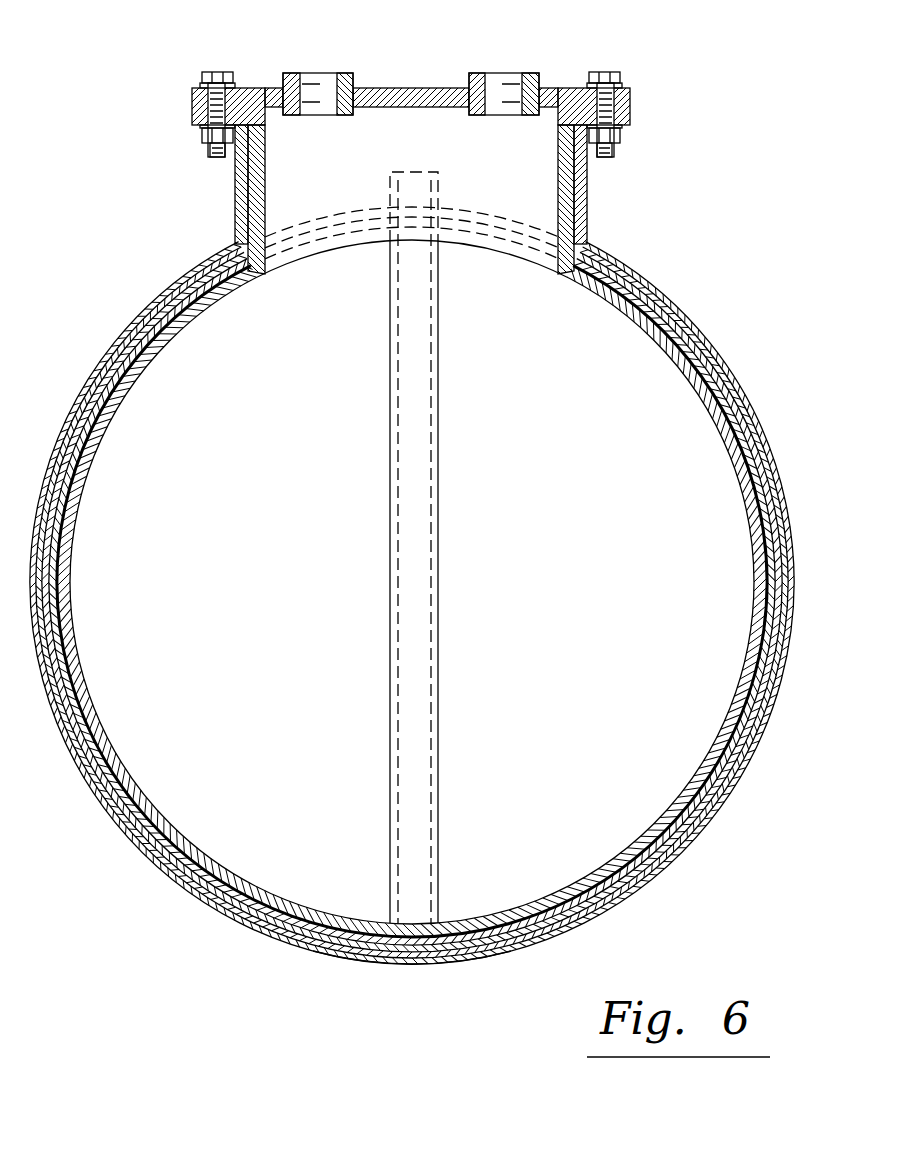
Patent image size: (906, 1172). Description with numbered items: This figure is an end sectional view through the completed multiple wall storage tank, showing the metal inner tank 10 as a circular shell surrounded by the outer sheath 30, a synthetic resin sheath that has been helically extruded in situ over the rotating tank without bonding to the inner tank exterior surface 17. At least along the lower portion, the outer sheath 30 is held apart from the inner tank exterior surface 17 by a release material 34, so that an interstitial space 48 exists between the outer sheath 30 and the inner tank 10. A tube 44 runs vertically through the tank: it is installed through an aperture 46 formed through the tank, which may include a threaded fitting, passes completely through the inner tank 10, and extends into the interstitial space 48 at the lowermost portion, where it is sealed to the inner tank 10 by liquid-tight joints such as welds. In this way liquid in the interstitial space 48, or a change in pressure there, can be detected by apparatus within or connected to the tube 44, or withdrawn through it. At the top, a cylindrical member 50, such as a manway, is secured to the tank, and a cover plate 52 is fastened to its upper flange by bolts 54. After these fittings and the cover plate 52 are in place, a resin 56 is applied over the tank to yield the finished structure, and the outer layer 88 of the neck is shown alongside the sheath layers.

The inner tank 10 is at (227, 313).
The inner tank exterior surface 17 is at (750, 453).
The outer sheath 30 is at (105, 350).
The release material 34 is at (636, 290).
The tube 44 is at (425, 667).
The aperture 46 is at (560, 272).
The interstitial space 48 is at (452, 956).
The cylindrical member 50 is at (265, 153).
The cover plate 52 is at (404, 88).
The bolts 54 is at (217, 72).
The resin 56 is at (698, 343).
The neck outer layer 88 is at (582, 204).